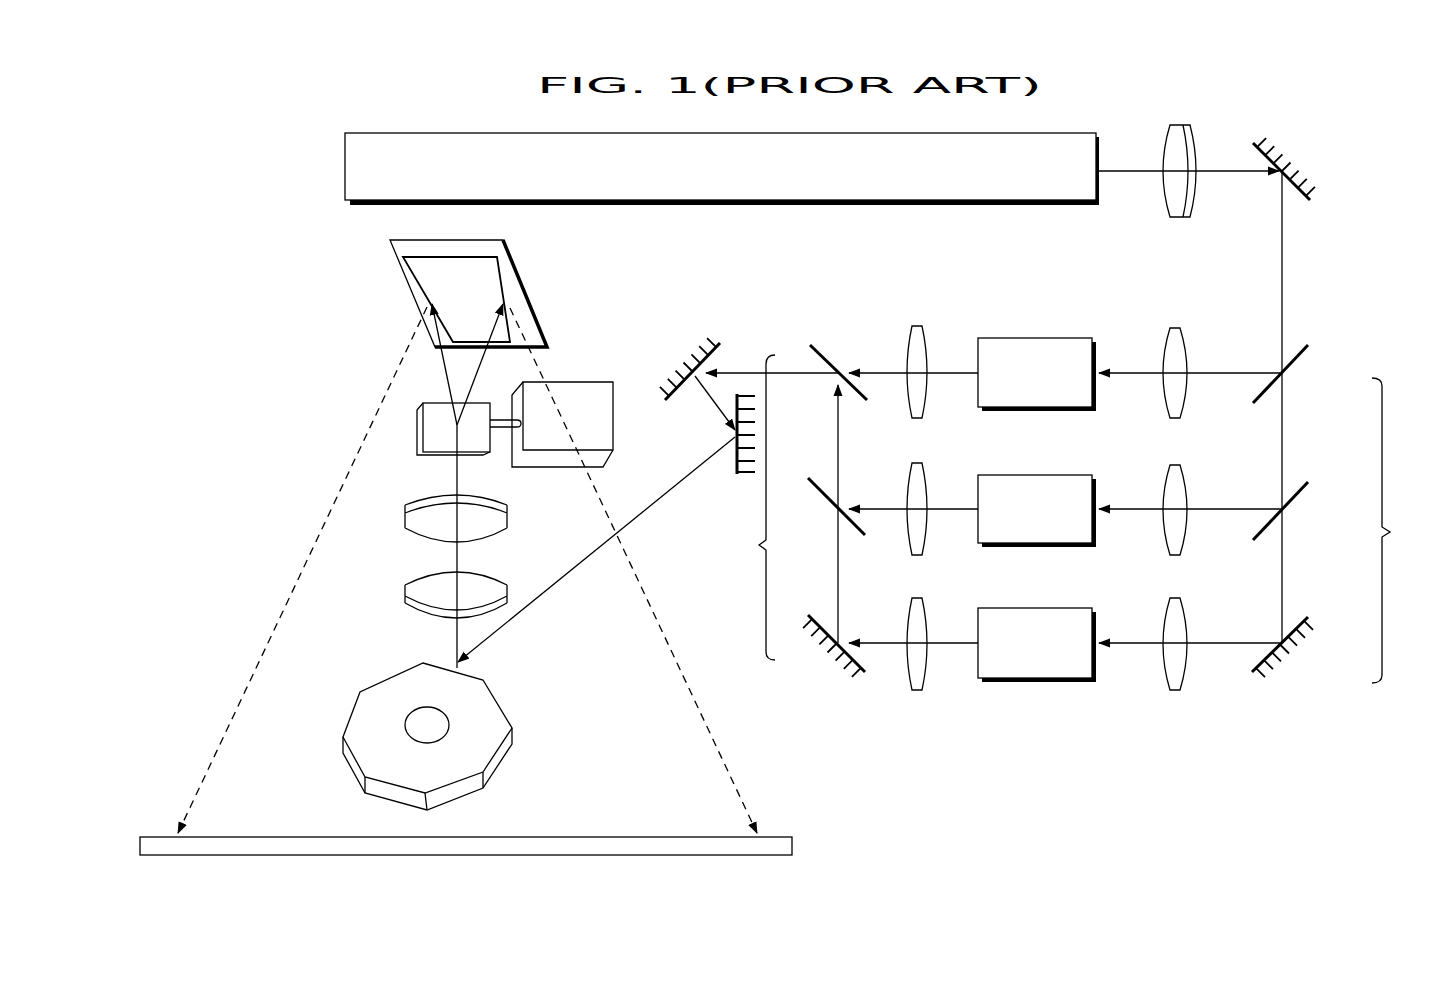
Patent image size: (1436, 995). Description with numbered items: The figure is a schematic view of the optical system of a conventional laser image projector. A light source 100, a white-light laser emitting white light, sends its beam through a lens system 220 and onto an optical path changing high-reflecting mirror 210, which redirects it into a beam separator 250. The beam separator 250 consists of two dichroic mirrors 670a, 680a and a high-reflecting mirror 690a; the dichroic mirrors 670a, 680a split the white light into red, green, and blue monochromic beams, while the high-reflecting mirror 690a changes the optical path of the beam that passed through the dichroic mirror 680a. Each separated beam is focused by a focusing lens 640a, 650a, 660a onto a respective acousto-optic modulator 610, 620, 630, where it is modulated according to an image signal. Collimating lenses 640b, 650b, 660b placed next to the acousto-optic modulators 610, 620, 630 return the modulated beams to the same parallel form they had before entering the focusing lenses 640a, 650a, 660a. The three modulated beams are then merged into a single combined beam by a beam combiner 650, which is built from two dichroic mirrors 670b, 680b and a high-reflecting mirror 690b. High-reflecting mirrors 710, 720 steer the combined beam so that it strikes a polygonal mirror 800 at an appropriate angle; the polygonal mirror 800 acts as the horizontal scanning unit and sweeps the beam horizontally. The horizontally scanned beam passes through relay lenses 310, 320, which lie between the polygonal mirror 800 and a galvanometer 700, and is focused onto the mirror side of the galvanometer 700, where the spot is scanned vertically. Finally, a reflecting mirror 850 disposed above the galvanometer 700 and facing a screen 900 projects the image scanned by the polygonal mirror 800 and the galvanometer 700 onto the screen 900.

The light source 100 is at (797, 207).
The optical path changing high-reflecting mirror 210 is at (1282, 152).
The lens system 220 is at (1178, 218).
The beam separator 250 is at (1403, 530).
The relay lens 310 is at (405, 590).
The relay lens 320 is at (493, 533).
The acousto-optic modulator 610 is at (1025, 338).
The acousto-optic modulator 620 is at (1025, 475).
The acousto-optic modulator 630 is at (1025, 608).
The focusing lens 640a is at (1180, 328).
The focusing lens 650a is at (1180, 465).
The focusing lens 660a is at (1180, 598).
The collimating lens 640b is at (907, 419).
The collimating lens 650b is at (907, 556).
The collimating lens 660b is at (907, 691).
The beam combiner 650 is at (744, 507).
The dichroic mirror 670a is at (1305, 353).
The dichroic mirror 680a is at (1308, 487).
The high-reflecting mirror 690a is at (1313, 623).
The dichroic mirror 670b is at (822, 348).
The dichroic mirror 680b is at (822, 482).
The high-reflecting mirror 690b is at (822, 617).
The galvanometer 700 is at (428, 455).
The high-reflecting mirror 710 is at (695, 353).
The high-reflecting mirror 720 is at (741, 480).
The polygonal mirror 800 is at (505, 759).
The reflecting mirror 850 is at (388, 245).
The screen 900 is at (785, 836).